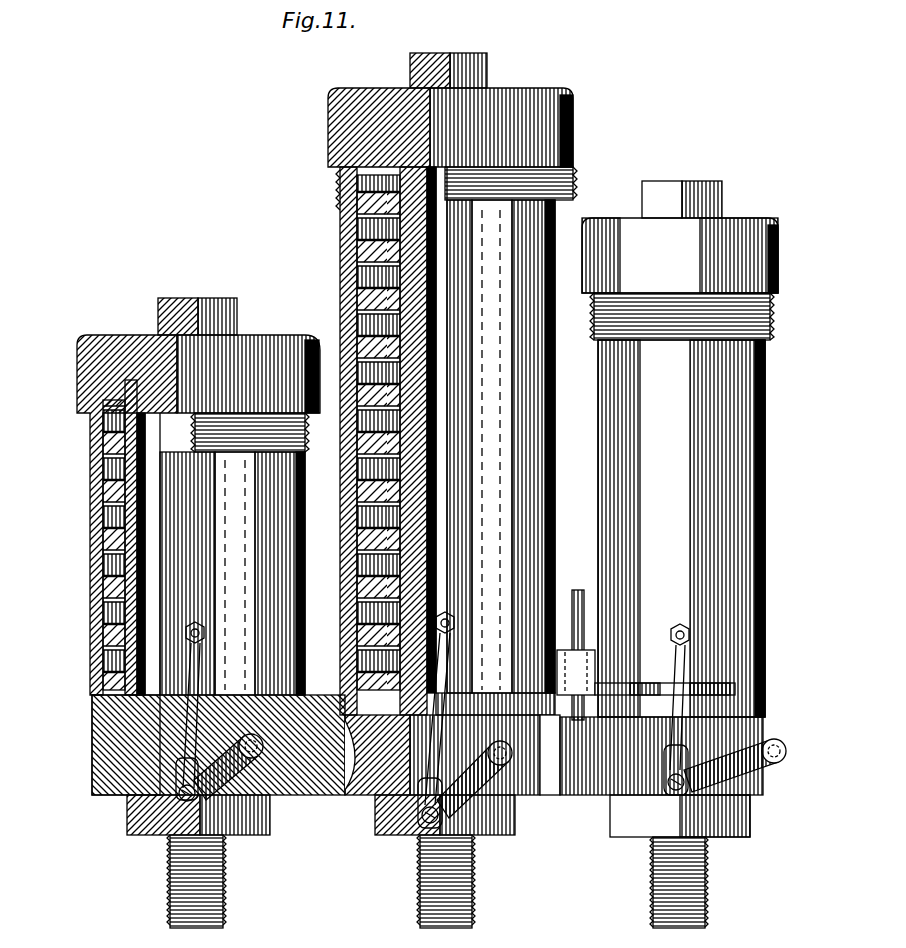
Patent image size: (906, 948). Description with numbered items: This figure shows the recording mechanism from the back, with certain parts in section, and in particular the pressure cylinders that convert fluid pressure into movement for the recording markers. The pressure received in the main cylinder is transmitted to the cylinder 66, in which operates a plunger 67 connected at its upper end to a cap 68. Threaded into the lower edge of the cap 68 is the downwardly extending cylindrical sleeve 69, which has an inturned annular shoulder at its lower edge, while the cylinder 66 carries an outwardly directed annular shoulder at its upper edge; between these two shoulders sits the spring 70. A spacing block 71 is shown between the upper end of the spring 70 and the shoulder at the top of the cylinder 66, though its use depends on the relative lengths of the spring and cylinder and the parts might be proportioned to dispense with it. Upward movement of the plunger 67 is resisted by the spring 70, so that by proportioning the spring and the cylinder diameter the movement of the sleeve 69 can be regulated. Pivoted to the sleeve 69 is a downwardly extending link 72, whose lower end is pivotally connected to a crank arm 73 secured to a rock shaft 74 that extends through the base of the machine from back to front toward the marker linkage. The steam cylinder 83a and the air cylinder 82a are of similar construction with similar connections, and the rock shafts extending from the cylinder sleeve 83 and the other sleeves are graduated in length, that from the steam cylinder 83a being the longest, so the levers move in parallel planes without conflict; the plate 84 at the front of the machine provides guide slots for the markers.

The cylinder 66 is at (400, 725).
The plunger 67 is at (346, 690).
The cap 68 is at (350, 96).
The cylindrical sleeve 69 is at (340, 225).
The spring 70 is at (368, 445).
The spacing block 71 is at (352, 246).
The link 72 is at (445, 742).
The crank arm 73 is at (485, 800).
The rock shaft 74 is at (512, 748).
The air cylinder 82a is at (130, 680).
The cylinder sleeve 83 is at (762, 585).
The steam cylinder 83a is at (735, 689).
The plate 84 is at (95, 535).